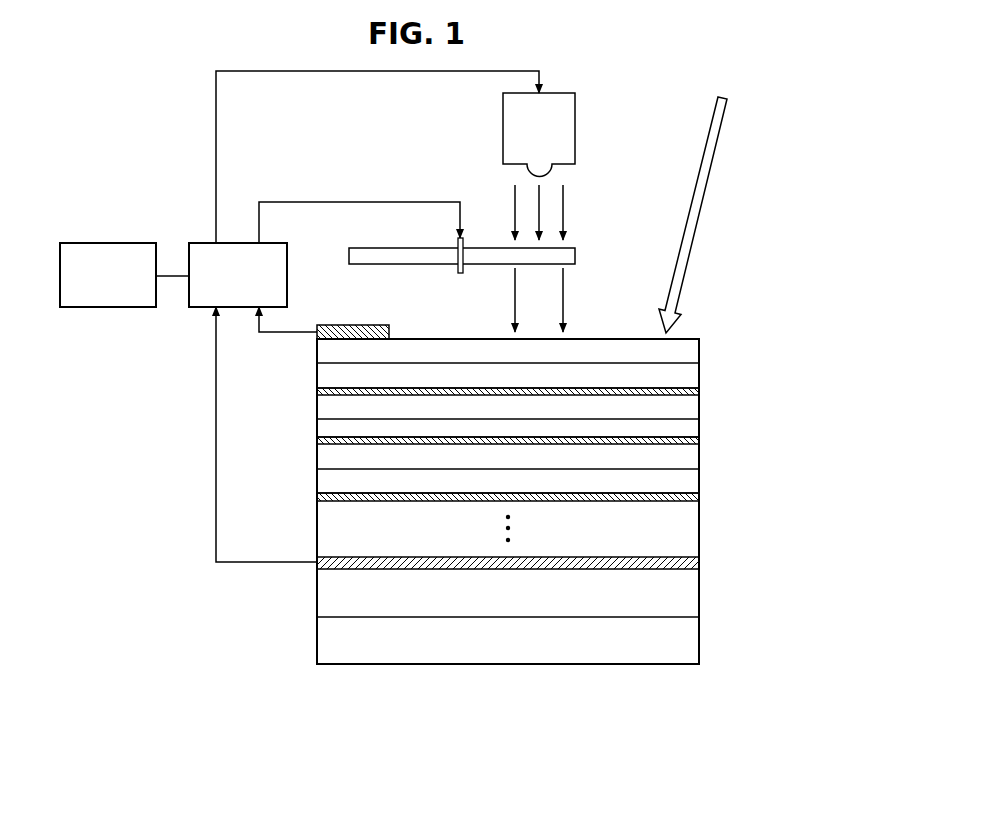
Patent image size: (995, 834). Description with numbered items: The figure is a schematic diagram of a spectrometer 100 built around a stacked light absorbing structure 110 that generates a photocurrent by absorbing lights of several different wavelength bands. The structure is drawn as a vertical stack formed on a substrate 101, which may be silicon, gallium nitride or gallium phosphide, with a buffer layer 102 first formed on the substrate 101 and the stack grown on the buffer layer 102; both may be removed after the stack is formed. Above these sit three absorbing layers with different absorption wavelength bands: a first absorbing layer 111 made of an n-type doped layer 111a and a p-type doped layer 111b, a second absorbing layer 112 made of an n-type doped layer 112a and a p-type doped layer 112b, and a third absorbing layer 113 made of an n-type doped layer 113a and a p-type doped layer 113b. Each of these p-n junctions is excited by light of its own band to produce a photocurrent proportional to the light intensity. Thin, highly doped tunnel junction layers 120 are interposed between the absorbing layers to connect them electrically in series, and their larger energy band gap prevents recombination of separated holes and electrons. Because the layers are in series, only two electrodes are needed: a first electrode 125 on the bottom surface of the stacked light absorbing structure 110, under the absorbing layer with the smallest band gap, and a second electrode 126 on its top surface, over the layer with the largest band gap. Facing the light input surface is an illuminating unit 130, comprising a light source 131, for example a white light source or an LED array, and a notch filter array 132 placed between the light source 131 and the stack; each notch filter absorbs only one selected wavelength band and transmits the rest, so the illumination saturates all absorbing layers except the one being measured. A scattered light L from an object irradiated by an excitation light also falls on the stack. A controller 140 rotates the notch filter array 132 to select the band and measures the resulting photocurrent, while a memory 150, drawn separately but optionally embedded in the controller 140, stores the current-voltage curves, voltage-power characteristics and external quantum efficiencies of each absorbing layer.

The spectrometer 100 is at (703, 719).
The substrate 101 is at (699, 640).
The buffer layer 102 is at (699, 605).
The stacked light absorbing structure 110 is at (706, 529).
The first absorbing layer 111 is at (771, 343).
The n-type doped layer 111a is at (699, 350).
The p-type doped layer 111b is at (699, 375).
The second absorbing layer 112 is at (771, 398).
The n-type doped layer 112a is at (699, 407).
The p-type doped layer 112b is at (699, 428).
The third absorbing layer 113 is at (771, 450).
The n-type doped layer 113a is at (699, 458).
The p-type doped layer 113b is at (699, 480).
The tunnel junction layers 120 is at (699, 392).
The first electrode 125 is at (699, 564).
The second electrode 126 is at (352, 325).
The illuminating unit 130 is at (515, 183).
The light source 131 is at (575, 130).
The notch filter array 132 is at (491, 255).
The controller 140 is at (203, 243).
The memory 150 is at (109, 243).
The scattered light L is at (712, 153).